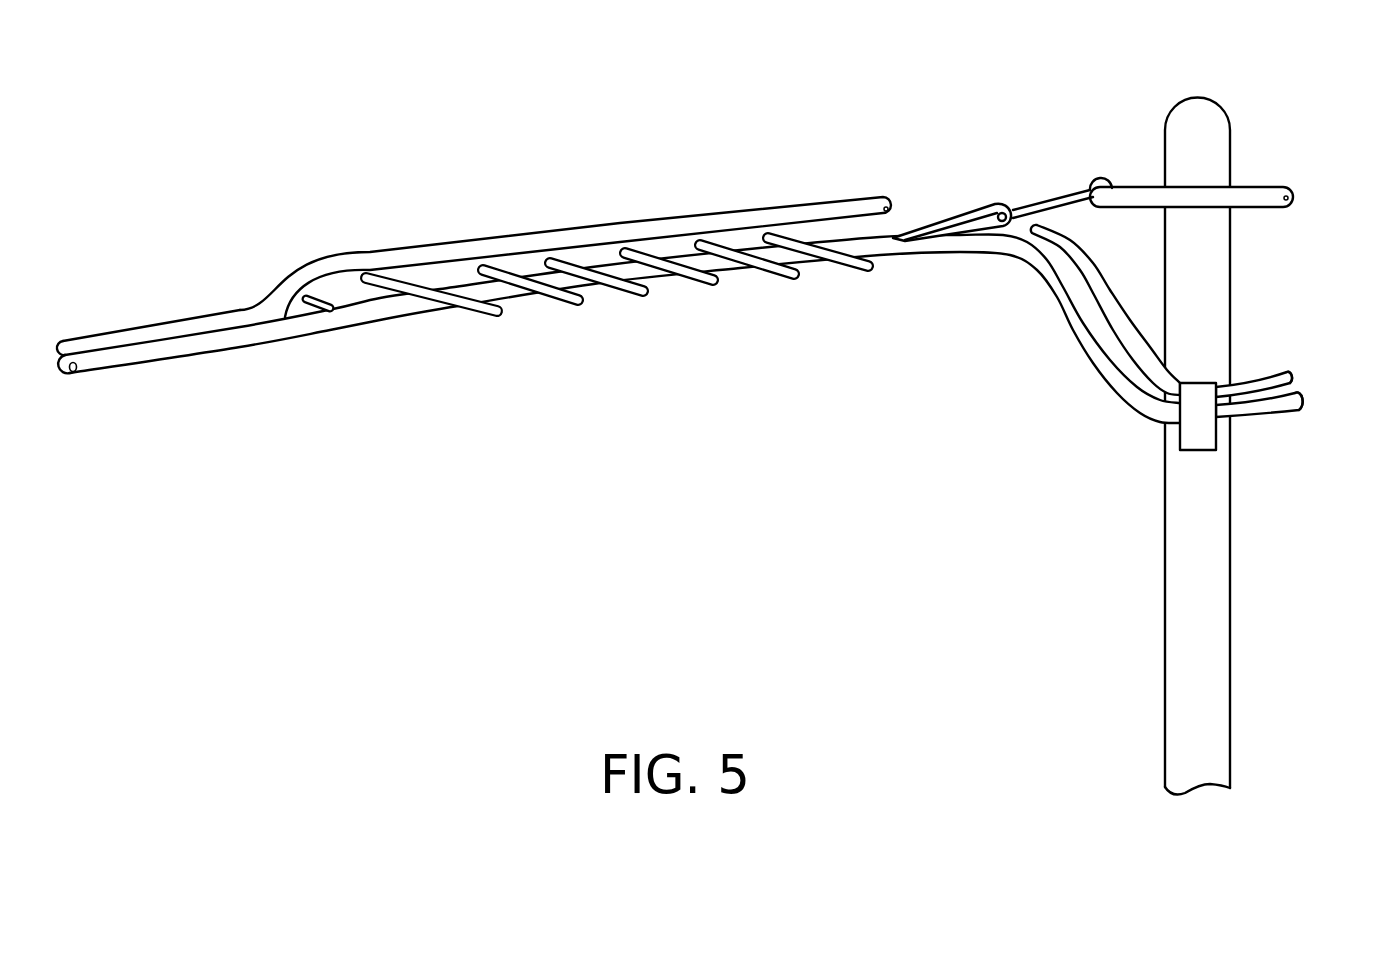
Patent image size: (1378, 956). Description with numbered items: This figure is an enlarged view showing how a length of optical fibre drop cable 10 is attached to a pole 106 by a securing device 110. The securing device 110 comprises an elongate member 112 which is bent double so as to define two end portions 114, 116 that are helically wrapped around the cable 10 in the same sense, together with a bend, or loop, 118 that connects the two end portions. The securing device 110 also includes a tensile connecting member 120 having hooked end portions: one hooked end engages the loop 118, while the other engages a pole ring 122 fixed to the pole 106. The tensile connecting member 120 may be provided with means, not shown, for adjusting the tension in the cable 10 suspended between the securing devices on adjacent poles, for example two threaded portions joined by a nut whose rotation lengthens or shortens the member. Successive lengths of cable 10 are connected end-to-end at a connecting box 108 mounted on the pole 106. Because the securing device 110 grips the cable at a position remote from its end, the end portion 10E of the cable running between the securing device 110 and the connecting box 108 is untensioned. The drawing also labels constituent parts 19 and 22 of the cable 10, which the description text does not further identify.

The optical fibre drop cable 10 is at (210, 347).
The end portion of the cable 10E is at (1051, 344).
The tube 19 is at (105, 380).
The tube 22 is at (82, 338).
The pole 106 is at (1215, 563).
The connecting box 108 is at (1198, 393).
The securing device 110 is at (856, 154).
The elongate member 112 is at (686, 308).
The end portion 114 is at (309, 308).
The end portion 116 is at (490, 318).
The loop 118 is at (960, 212).
The tensile connecting member 120 is at (1058, 199).
The pole ring 122 is at (1126, 186).